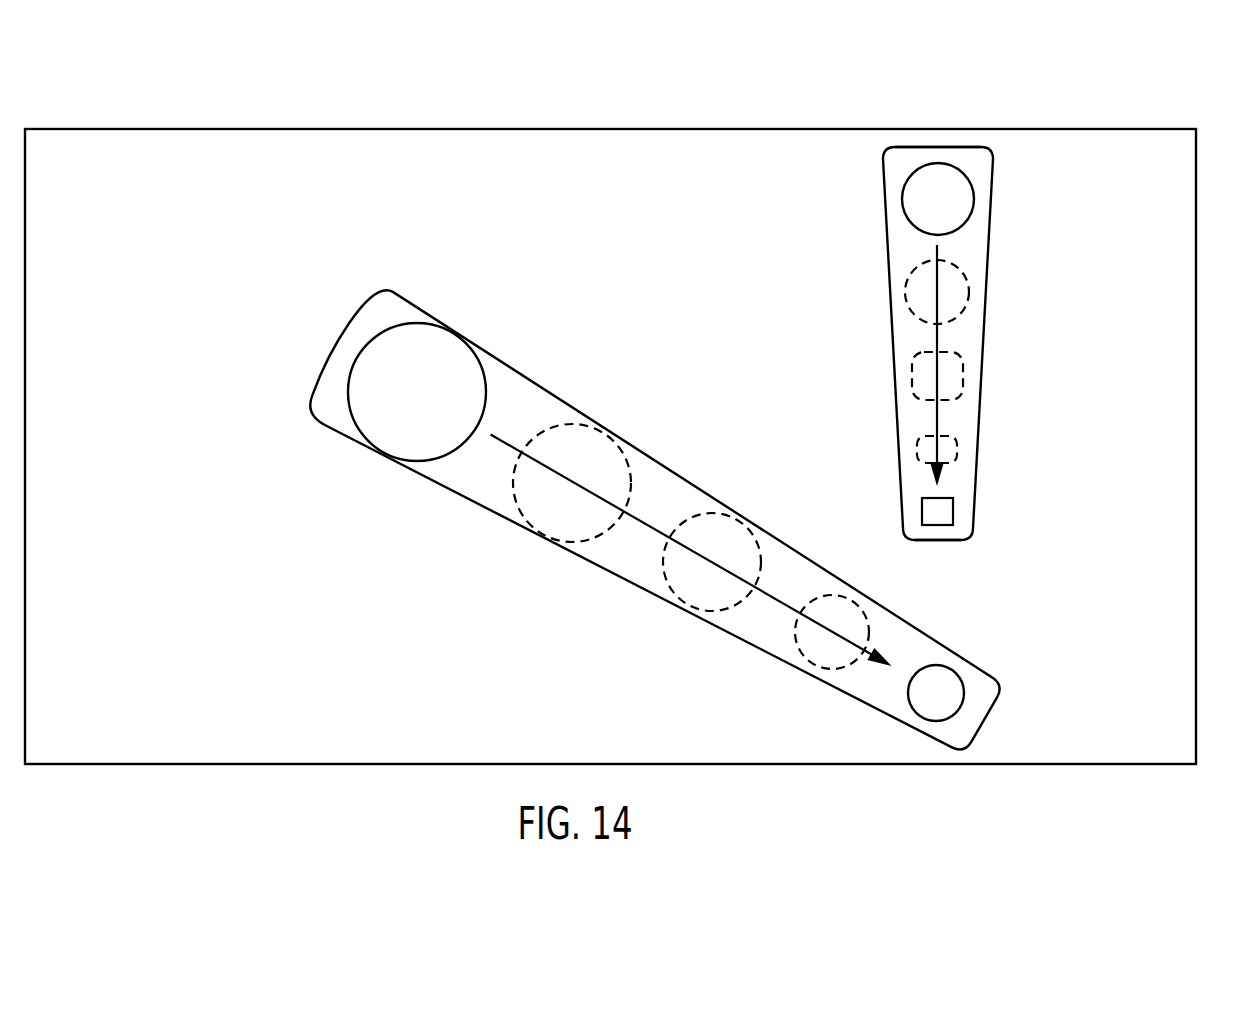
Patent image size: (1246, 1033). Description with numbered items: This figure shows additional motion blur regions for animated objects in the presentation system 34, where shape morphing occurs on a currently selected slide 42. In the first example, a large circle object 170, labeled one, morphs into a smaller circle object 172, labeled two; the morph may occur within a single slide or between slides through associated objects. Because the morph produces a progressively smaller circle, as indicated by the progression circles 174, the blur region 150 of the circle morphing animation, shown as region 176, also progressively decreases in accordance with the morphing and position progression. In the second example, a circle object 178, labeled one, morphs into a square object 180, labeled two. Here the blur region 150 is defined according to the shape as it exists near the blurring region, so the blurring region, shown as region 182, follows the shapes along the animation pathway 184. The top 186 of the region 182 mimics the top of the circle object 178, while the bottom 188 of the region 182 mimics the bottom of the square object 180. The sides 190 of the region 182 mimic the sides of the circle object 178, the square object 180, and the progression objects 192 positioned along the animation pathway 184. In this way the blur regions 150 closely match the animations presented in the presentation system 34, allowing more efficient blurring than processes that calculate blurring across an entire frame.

The presentation program 34 is at (633, 409).
The currently selected slide 42 is at (1181, 604).
The blur region 150 is at (659, 532).
The region 176 is at (659, 532).
The large circle object 170 is at (482, 370).
The smaller circle object 172 is at (965, 688).
The progression circles 174 is at (630, 463).
The circle object 178 is at (975, 198).
The square object 180 is at (953, 512).
The region 182 is at (915, 343).
The animation pathway 184 is at (915, 343).
The top of the region 186 is at (912, 146).
The bottom of the region 188 is at (938, 541).
The sides of the region 190 is at (896, 428).
The progression objects 192 is at (968, 284).